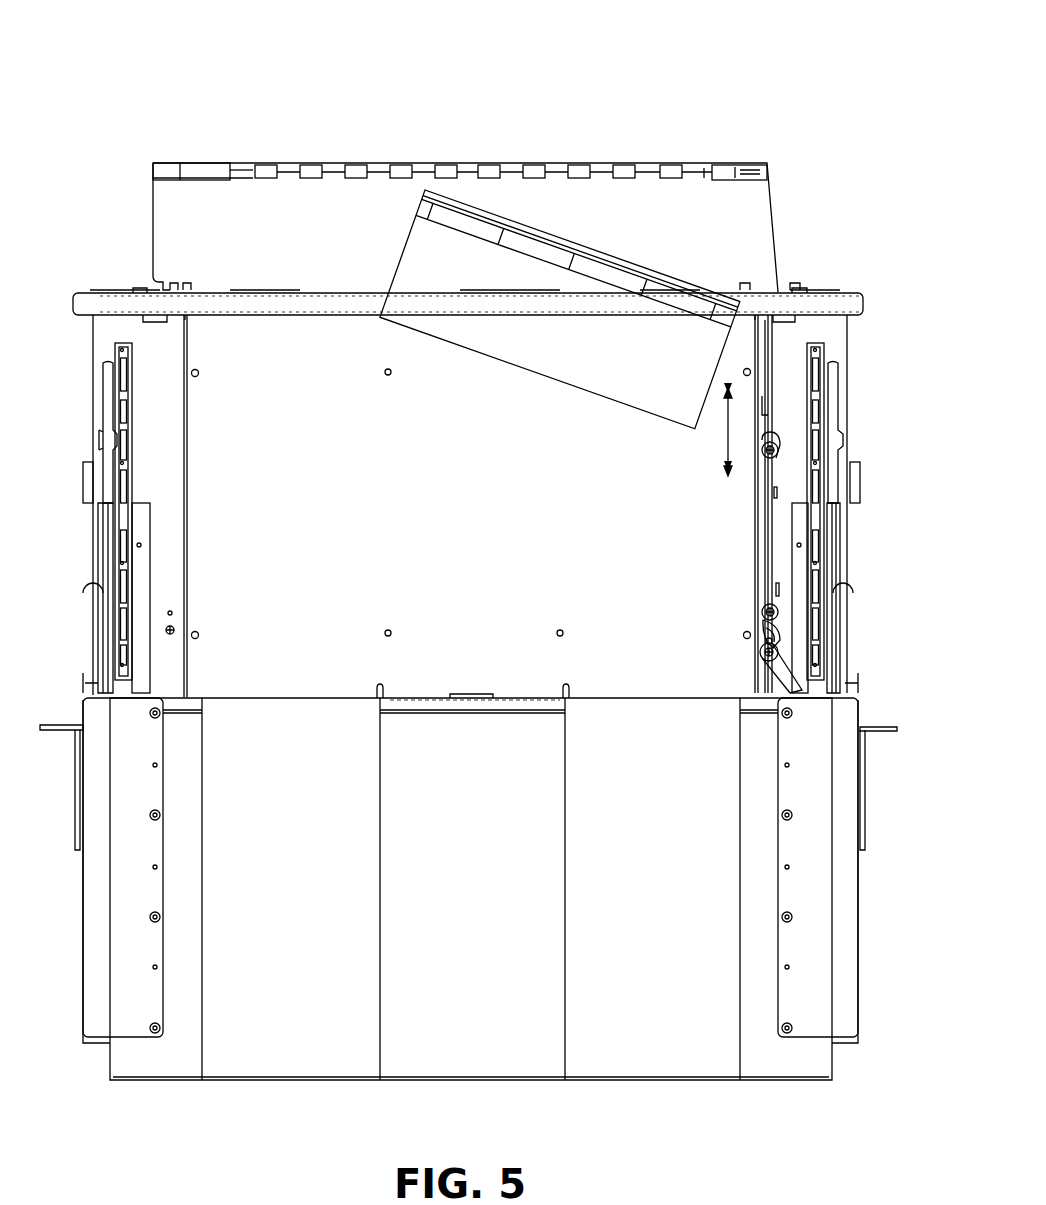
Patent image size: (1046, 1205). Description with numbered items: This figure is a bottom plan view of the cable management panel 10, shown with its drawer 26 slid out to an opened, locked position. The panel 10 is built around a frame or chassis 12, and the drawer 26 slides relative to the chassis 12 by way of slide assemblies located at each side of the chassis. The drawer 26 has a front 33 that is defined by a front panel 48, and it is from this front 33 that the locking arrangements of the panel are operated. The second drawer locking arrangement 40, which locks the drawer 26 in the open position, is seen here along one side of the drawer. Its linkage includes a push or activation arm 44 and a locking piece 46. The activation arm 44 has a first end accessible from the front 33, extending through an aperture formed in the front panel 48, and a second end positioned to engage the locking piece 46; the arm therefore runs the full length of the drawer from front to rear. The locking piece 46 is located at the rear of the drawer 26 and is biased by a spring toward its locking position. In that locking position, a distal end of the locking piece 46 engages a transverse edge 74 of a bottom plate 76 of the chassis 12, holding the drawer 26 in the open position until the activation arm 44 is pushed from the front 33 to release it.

The cable management panel 10 is at (360, 88).
The chassis 12 is at (717, 1025).
The drawer 26 is at (790, 198).
The front 33 is at (292, 276).
The second drawer locking arrangement 40 is at (707, 562).
The activation arm 44 is at (767, 575).
The locking piece 46 is at (767, 672).
The front panel 48 is at (817, 302).
The transverse edge 74 is at (805, 692).
The bottom plate 76 is at (823, 792).